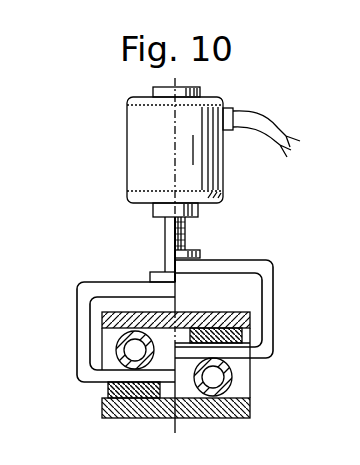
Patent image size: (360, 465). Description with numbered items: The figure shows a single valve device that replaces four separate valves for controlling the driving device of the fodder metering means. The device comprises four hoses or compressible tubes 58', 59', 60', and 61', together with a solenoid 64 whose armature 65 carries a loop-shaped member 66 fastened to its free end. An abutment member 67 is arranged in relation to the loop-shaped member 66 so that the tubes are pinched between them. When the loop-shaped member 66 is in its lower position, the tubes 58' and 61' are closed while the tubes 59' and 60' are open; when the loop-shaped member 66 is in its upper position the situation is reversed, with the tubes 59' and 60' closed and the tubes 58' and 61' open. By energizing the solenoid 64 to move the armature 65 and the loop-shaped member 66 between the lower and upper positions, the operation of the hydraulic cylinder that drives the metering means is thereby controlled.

The solenoid 64 is at (127, 158).
The armature 65 is at (165, 245).
The loop-shaped member 66 is at (270, 288).
The compressible tube 60' is at (258, 333).
The compressible tube 59' is at (100, 346).
The compressible tube 61' is at (222, 401).
The compressible tube 58' is at (134, 421).
The abutment member 67 is at (101, 408).